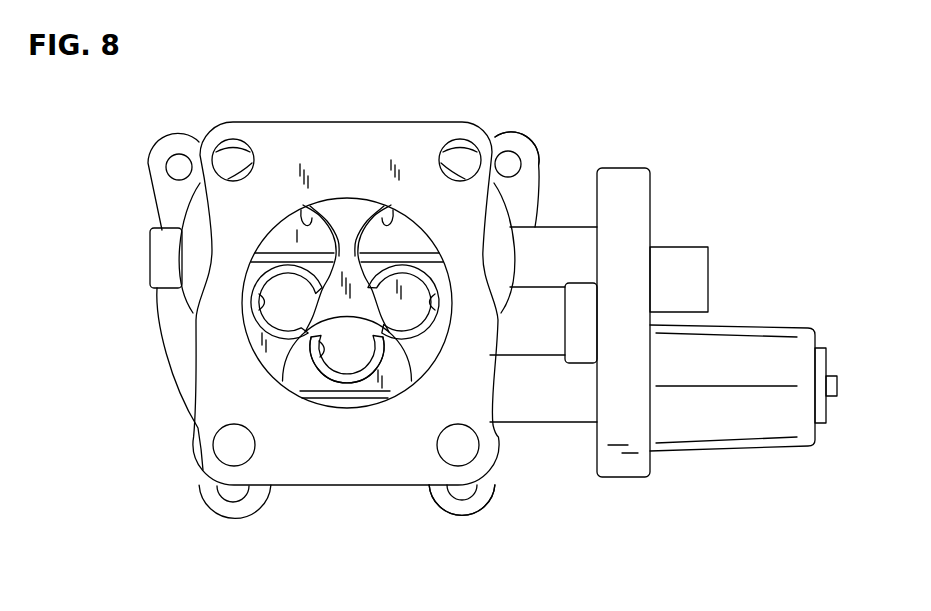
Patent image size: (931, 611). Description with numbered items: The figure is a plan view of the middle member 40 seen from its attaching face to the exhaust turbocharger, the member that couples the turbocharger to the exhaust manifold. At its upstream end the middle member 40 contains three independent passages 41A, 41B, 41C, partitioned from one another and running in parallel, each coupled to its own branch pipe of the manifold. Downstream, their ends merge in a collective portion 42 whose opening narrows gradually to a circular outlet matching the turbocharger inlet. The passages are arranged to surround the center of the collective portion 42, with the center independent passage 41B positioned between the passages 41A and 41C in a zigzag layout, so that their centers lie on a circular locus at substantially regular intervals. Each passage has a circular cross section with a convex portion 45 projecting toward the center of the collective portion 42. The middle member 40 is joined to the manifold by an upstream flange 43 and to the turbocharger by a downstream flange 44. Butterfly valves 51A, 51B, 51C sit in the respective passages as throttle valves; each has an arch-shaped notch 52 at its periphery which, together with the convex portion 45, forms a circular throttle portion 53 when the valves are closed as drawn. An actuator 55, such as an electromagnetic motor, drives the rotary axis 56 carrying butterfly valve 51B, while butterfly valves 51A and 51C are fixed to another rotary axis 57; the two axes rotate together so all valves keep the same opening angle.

The middle member 40 is at (500, 93).
The independent passage 41A is at (300, 215).
The independent passage 41B is at (402, 352).
The independent passage 41C is at (386, 222).
The collective portion 42 is at (303, 400).
The upstream flange 43 is at (527, 190).
The downstream flange 44 is at (380, 470).
The convex portion 45 is at (347, 317).
The butterfly valve 51A is at (280, 230).
The butterfly valve 51B is at (320, 385).
The butterfly valve 51C is at (418, 222).
The arch-shaped notch 52 is at (425, 333).
The throttle portion 53 is at (437, 302).
The actuator 55 is at (753, 345).
The rotary axis 56 is at (345, 400).
The rotary axis 57 is at (330, 226).